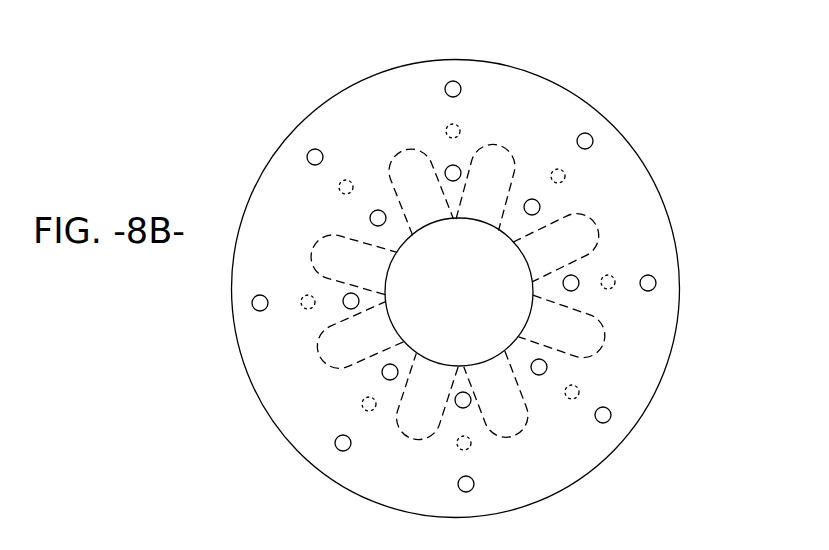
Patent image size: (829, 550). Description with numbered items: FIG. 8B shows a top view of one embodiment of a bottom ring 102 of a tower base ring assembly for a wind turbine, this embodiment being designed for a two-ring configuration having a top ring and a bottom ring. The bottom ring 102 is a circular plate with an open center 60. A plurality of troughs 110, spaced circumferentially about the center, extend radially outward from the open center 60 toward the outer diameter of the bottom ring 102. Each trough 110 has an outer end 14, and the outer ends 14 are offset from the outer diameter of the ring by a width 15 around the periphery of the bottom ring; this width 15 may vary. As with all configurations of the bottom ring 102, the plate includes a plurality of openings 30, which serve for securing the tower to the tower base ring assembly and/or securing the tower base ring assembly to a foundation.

The outer end 14 is at (395, 156).
The width 15 is at (508, 145).
The openings 30 is at (615, 277).
The open center 60 is at (449, 297).
The bottom ring 102 is at (658, 138).
The troughs 110 is at (330, 247).